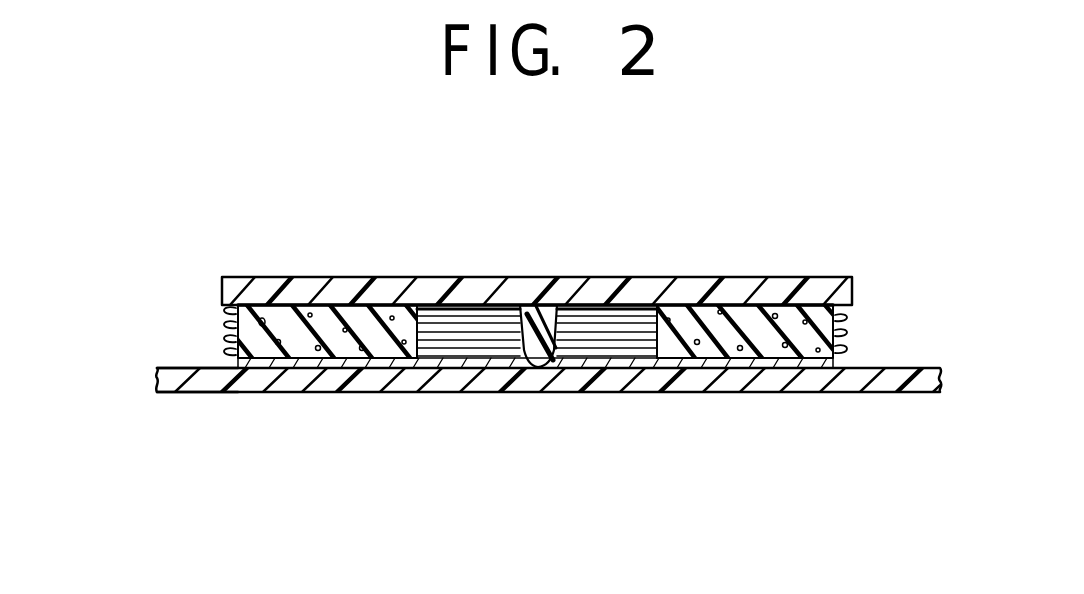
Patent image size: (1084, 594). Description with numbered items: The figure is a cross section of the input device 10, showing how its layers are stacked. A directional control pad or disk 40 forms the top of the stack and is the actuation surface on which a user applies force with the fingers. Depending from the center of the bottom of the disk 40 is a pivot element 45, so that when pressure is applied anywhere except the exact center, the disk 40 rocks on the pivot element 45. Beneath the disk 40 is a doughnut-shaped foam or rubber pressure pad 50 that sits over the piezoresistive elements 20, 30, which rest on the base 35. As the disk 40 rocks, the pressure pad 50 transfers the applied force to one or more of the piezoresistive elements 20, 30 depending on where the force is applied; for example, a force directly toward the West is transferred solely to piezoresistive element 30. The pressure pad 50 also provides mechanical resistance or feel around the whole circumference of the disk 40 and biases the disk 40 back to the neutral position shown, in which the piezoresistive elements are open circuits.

The device 10 is at (843, 270).
The piezoresistive element 20 is at (750, 363).
The piezoresistive element 30 is at (327, 363).
The base 35 is at (177, 368).
The directional control pad or disk 40 is at (480, 287).
The pivot element 45 is at (553, 368).
The foam or rubber pressure pad 50 is at (257, 316).